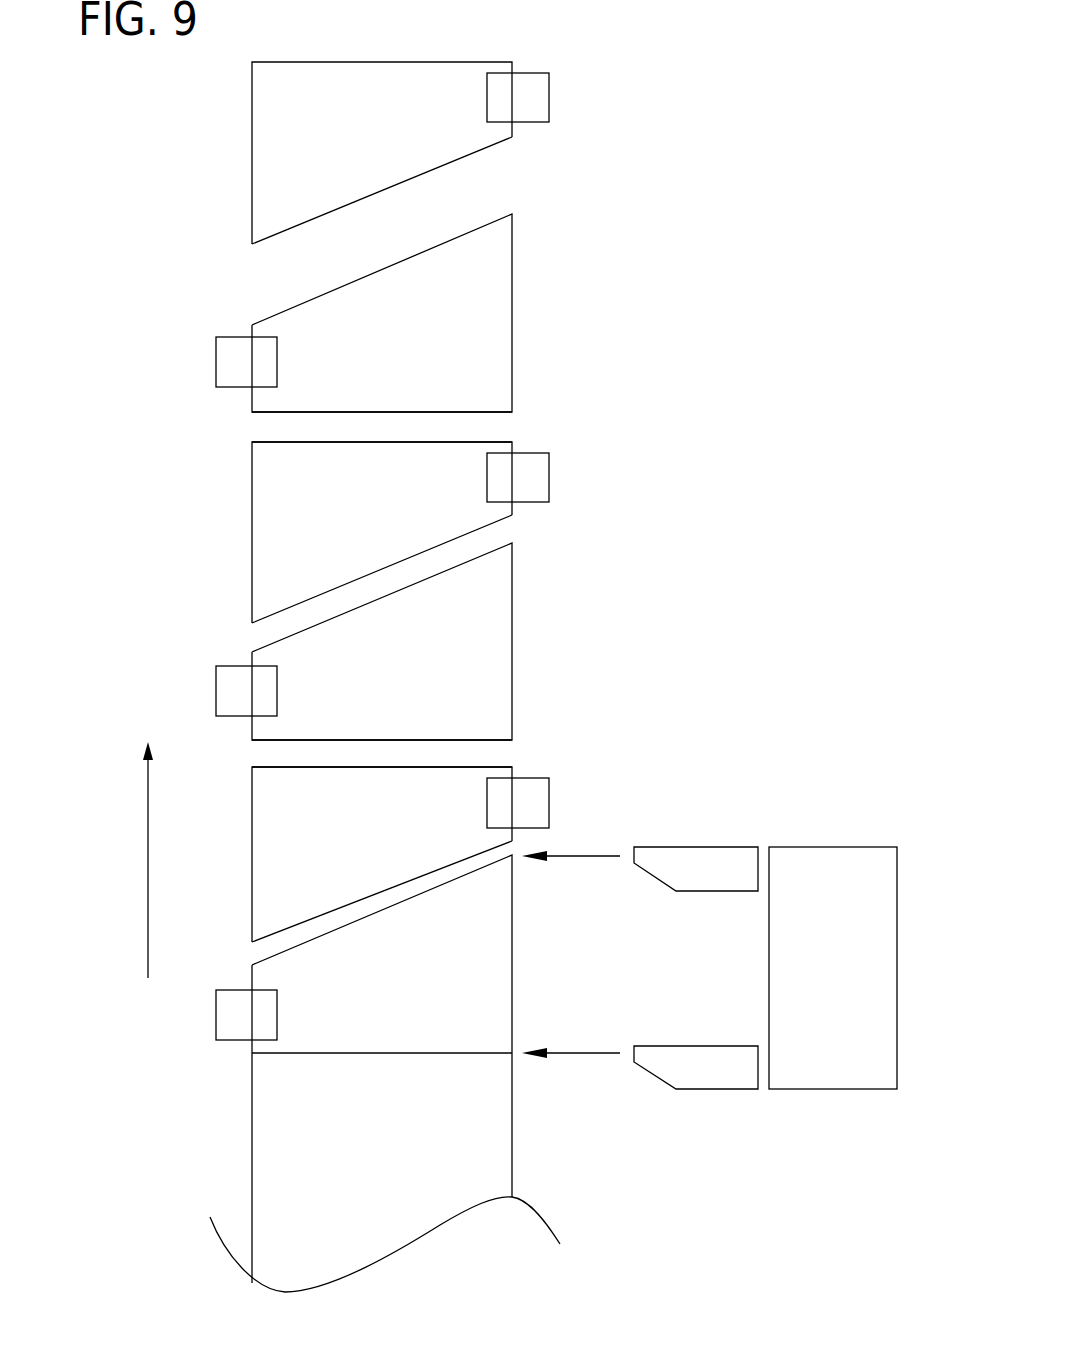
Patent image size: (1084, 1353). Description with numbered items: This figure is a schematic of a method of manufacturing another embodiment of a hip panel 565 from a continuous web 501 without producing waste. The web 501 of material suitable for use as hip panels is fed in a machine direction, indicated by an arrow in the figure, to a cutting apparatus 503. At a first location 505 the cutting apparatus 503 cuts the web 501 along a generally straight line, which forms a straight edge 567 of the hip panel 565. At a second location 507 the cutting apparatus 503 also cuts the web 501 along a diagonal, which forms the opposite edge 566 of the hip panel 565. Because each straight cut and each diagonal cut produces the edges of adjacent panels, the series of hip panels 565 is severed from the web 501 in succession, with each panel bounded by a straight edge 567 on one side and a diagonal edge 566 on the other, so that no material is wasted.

The continuous web 501 is at (463, 1157).
The cutting apparatus 503 is at (798, 847).
The first location 505 is at (698, 1046).
The second location 507 is at (691, 847).
The hip panel 565 is at (537, 63).
The opposite edge 566 is at (327, 294).
The edge 567 is at (312, 412).